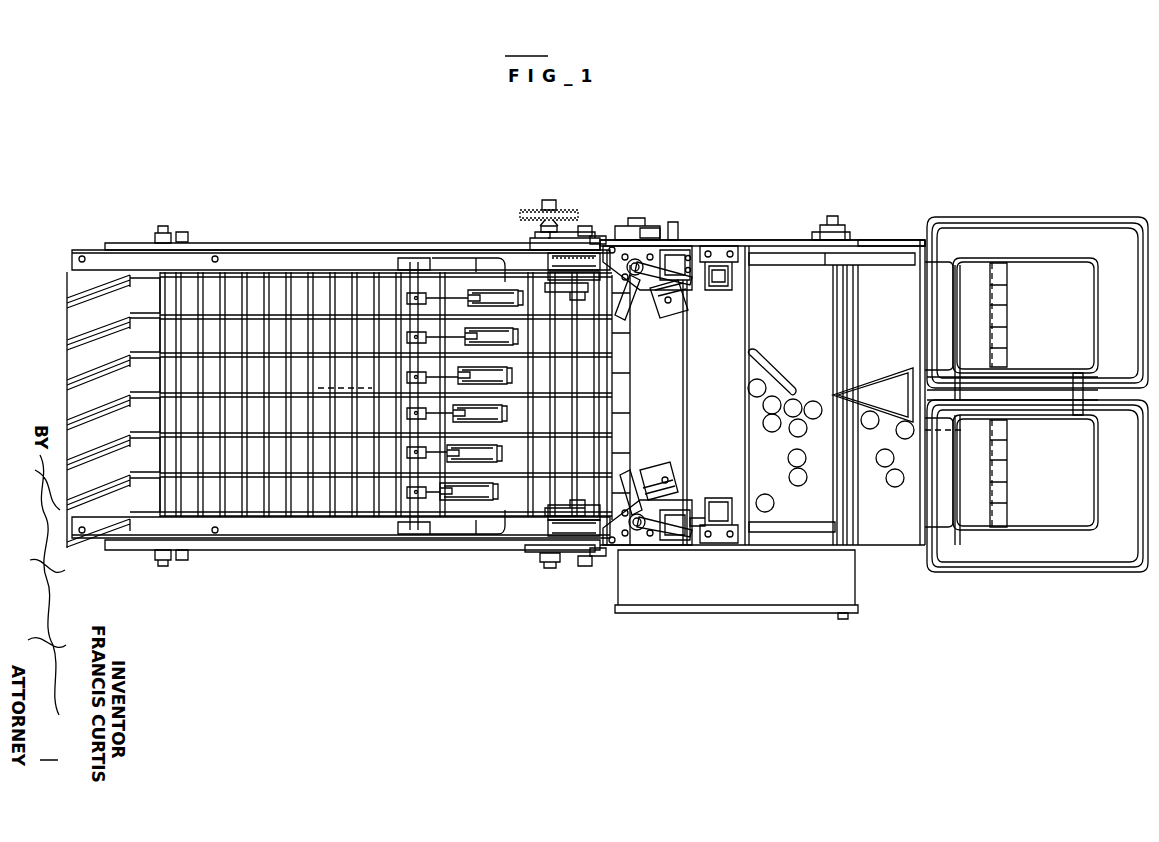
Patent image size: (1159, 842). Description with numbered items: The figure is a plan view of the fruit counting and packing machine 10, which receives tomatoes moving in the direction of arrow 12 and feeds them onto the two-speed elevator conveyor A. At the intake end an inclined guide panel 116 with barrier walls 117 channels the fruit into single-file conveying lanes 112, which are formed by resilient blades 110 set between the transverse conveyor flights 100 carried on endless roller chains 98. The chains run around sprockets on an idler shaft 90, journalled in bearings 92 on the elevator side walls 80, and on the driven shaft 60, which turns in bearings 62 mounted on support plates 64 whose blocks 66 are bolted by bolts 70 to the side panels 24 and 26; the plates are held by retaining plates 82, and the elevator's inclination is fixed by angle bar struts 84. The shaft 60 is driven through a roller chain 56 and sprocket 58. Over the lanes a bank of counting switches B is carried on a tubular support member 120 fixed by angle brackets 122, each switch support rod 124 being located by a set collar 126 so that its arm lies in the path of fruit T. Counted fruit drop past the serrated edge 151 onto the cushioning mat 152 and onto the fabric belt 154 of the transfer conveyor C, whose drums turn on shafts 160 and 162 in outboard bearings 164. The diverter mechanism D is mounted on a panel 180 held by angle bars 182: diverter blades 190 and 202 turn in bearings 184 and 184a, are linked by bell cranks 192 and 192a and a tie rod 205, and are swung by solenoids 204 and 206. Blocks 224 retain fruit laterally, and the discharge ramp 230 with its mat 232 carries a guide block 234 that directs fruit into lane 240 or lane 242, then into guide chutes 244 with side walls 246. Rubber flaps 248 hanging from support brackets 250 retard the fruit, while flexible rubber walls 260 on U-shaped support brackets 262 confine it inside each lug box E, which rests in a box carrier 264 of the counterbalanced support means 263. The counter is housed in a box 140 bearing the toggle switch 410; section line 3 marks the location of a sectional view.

The fruit counting and packing machine 10 is at (728, 188).
The arrow 12 is at (58, 355).
The side panel 24 is at (715, 238).
The side panel 26 is at (828, 548).
The roller chain 56 is at (568, 215).
The sprocket 58 is at (548, 214).
The driven shaft 60 is at (549, 200).
The bearing 62 is at (532, 238).
The support plate 64 is at (545, 255).
The block 66 is at (600, 240).
The bolt 70 is at (597, 236).
The side wall 80 is at (342, 250).
The retaining plate 82 is at (545, 527).
The angle bar strut 84 is at (265, 246).
The idler shaft 90 is at (162, 233).
The bearing 92 is at (152, 242).
The roller chain 98 is at (575, 286).
The conveyor flight 100 is at (330, 497).
The blade 110 is at (140, 330).
The conveying lane 112 is at (158, 336).
The guide panel 116 is at (66, 370).
The barrier wall 117 is at (105, 325).
The tubular support member 120 is at (404, 296).
The angle bracket 122 is at (428, 258).
The switch support rod 124 is at (462, 294).
The set collar 126 is at (405, 297).
The box 140 is at (736, 581).
The serration 151 is at (612, 428).
The mat 152 is at (612, 378).
The belt 154 is at (835, 392).
The shaft 160 is at (645, 220).
The shaft 162 is at (832, 222).
The outboard bearing 164 is at (655, 227).
The panel 180 is at (703, 412).
The angle bar 182 is at (880, 240).
The bearing 184 is at (632, 255).
The bearing 184a is at (637, 545).
The diverter blade 190 is at (782, 380).
The bell crank 192 is at (633, 298).
The bell crank 192a is at (630, 505).
The diverter blade 202 is at (785, 532).
The solenoid 204 is at (718, 280).
The tie rod 205 is at (688, 372).
The solenoid 206 is at (717, 506).
The block 224 is at (800, 266).
The discharge ramp 230 is at (1000, 297).
The mat 232 is at (888, 352).
The guide block 234 is at (873, 395).
The lane 240 is at (832, 330).
The lane 242 is at (845, 468).
The guide chute 244 is at (941, 394).
The side wall 246 is at (935, 272).
The rubber flap 248 is at (1000, 316).
The support bracket 250 is at (960, 340).
The rubber wall 260 is at (1098, 268).
The support bracket 262 is at (1072, 282).
The support means 263 is at (965, 218).
The box carrier 264 is at (1046, 217).
The toggle switch 410 is at (838, 616).
The elevator conveyor A is at (318, 246).
The bank of counting switches B is at (497, 288).
The transfer conveyor C is at (855, 290).
The diverter mechanism D is at (770, 368).
The lug box E is at (1068, 220).
The fruit T is at (765, 495).
The section line 3- 3 is at (332, 420).